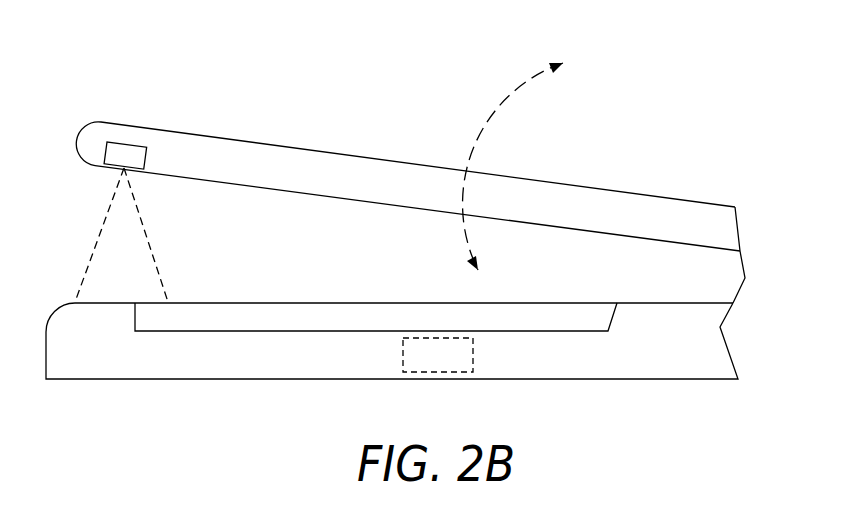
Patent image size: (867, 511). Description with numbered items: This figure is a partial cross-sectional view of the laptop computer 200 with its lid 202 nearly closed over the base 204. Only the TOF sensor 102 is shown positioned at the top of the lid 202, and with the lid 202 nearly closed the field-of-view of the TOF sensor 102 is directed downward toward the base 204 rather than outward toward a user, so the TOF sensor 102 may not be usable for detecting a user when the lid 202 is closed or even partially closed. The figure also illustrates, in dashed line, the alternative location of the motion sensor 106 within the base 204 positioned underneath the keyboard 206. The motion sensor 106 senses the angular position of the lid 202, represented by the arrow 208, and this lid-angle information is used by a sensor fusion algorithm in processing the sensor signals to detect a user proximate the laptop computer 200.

The laptop computer 200 is at (670, 150).
The lid 202 is at (318, 152).
The base 204 is at (278, 370).
The keyboard 206 is at (378, 326).
The arrow 208 is at (493, 110).
The TOF sensor 102 is at (150, 157).
The motion sensor 106 is at (457, 366).